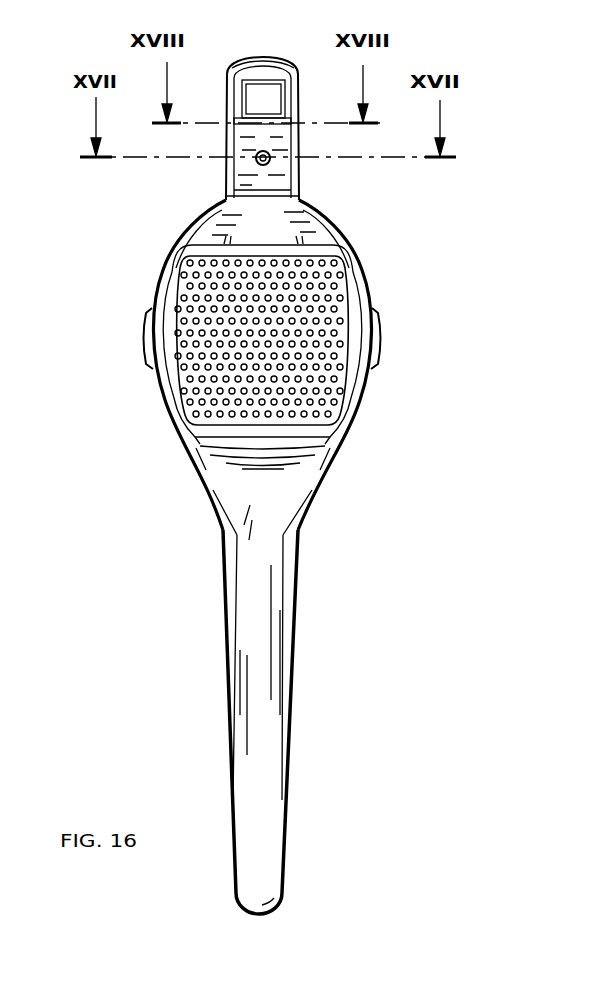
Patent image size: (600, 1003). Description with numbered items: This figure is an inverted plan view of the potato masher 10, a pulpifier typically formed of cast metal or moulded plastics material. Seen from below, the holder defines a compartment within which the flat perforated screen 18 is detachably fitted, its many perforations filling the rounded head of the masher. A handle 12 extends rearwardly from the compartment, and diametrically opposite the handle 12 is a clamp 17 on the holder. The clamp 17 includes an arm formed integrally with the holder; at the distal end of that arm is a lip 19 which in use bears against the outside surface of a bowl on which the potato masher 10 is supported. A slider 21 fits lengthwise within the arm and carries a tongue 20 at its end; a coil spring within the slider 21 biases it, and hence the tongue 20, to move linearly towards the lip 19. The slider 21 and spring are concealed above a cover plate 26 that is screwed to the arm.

The potato masher 10 is at (457, 595).
The handle 12 is at (300, 702).
The clamp 17 is at (348, 186).
The flat perforated screen 18 is at (303, 330).
The lip 19 is at (262, 58).
The tongue 20 is at (289, 66).
The slider 21 is at (258, 98).
The cover plate 26 is at (278, 137).